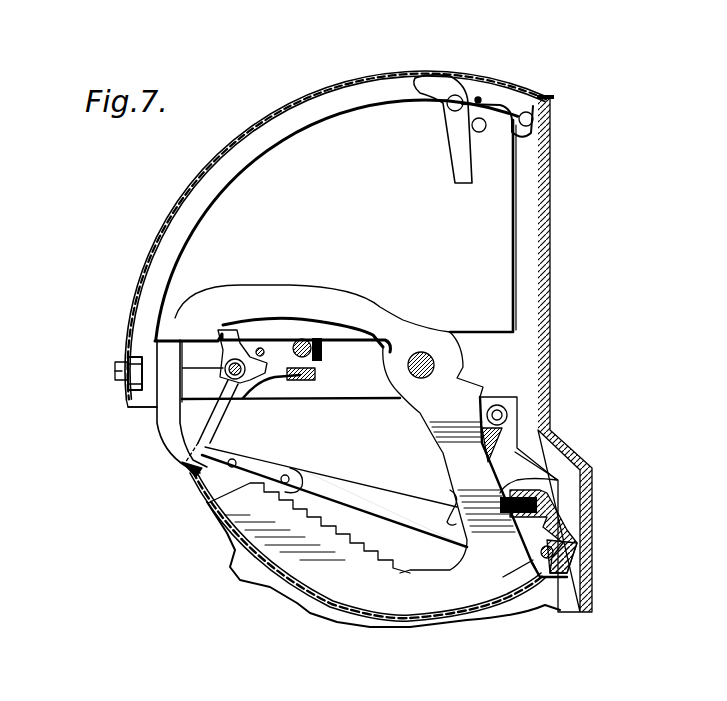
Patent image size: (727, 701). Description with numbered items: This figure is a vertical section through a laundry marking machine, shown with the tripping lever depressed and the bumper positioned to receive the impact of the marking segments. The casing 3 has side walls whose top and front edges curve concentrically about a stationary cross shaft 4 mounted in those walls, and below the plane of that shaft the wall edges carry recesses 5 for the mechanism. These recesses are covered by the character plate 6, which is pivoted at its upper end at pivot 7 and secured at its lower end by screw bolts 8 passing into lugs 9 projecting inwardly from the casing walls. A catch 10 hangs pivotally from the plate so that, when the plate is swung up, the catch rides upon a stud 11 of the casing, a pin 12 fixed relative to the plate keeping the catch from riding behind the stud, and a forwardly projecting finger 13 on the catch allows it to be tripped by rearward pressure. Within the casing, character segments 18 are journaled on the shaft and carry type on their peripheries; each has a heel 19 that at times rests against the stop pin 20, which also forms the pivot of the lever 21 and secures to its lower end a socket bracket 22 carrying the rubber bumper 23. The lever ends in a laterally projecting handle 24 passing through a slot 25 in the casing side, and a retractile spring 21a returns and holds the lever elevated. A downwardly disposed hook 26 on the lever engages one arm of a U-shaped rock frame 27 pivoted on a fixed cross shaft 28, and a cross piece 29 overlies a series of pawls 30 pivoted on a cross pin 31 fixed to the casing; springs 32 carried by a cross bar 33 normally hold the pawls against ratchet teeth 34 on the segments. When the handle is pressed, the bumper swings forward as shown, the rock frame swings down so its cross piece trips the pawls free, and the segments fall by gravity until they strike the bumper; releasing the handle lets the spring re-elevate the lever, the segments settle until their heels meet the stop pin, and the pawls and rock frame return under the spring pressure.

The casing 3 is at (551, 239).
The stationary cross shaft 4 is at (426, 357).
The recesses 5 is at (190, 485).
The character plate 6 is at (300, 99).
The pivot 7 is at (537, 117).
The screw bolts 8 is at (115, 363).
The lugs 9 is at (133, 412).
The catch 10 is at (445, 140).
The stud 11 is at (480, 132).
The pin 12 is at (481, 99).
The finger 13 is at (420, 92).
The character segments 18 is at (305, 345).
The heels 19 is at (526, 568).
The stop pin 20 is at (547, 559).
The lever 21 is at (372, 490).
The retractile spring 21a is at (500, 435).
The socket bracket 22 is at (556, 506).
The bumper 23 is at (558, 479).
The handle 24 is at (250, 436).
The slot 25 is at (218, 416).
The hook 26 is at (170, 440).
The rock frame 27 is at (200, 353).
The fixed cross shaft 28 is at (362, 293).
The cross piece 29 is at (263, 347).
The pawls 30 is at (234, 330).
The cross pin 31 is at (230, 373).
The springs 32 is at (268, 388).
The cross bar 33 is at (316, 370).
The ratchet teeth 34 is at (345, 557).